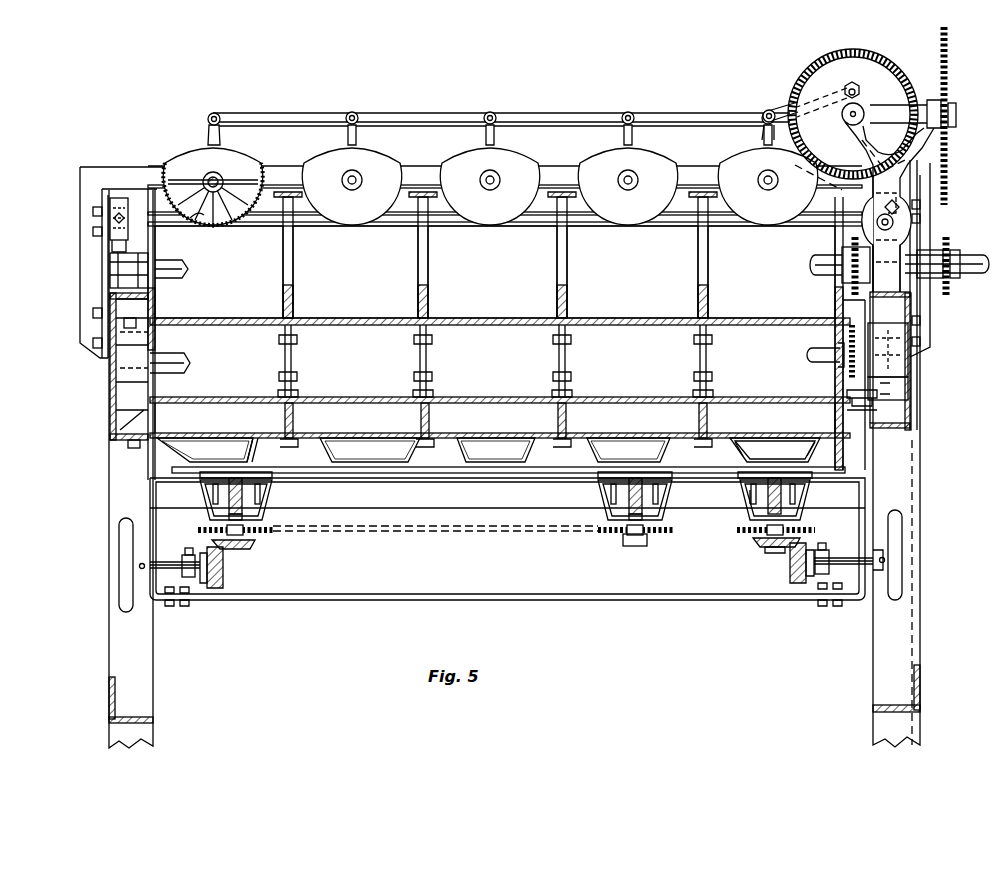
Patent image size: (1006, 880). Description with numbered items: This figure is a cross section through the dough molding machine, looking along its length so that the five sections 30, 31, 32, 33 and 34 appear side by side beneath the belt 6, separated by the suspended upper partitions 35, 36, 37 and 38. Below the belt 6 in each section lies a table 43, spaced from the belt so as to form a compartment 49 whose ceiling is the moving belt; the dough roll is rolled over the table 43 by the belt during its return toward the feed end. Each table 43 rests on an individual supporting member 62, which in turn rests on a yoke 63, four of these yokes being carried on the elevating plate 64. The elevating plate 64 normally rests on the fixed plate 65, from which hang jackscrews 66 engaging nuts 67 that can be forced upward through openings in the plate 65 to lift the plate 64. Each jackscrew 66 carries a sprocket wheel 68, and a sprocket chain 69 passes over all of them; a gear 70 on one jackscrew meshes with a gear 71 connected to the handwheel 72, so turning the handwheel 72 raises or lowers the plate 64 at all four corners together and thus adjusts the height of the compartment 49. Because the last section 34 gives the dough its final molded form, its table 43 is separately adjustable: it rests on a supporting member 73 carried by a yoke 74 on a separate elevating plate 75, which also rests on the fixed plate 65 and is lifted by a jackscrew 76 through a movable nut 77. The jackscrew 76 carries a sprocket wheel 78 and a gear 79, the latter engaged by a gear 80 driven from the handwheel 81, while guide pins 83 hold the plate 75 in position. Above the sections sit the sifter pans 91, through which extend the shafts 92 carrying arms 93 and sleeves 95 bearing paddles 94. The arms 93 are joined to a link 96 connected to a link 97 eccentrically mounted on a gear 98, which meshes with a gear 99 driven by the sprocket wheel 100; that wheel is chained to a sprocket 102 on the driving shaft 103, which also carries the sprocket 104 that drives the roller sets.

The belt 6 is at (246, 317).
The section 30 is at (219, 272).
The section 31 is at (355, 272).
The section 32 is at (492, 272).
The section 33 is at (632, 272).
The section 34 is at (771, 272).
The partition 35 is at (294, 299).
The partition 36 is at (416, 296).
The partition 37 is at (555, 296).
The partition 38 is at (696, 295).
The table 43 is at (200, 438).
The compartment 49 is at (706, 407).
The supporting member 62 is at (208, 446).
The yoke 63 is at (256, 448).
The elevating plate 64 is at (308, 464).
The fixed plate 65 is at (414, 482).
The jackscrew 66 is at (262, 498).
The nut 67 is at (436, 496).
The sprocket wheel 68 is at (270, 533).
The sprocket chain 69 is at (482, 532).
The gear 70 is at (254, 549).
The gear 71 is at (223, 572).
The handwheel 72 is at (131, 603).
The supporting member 73 is at (768, 442).
The yoke 74 is at (733, 458).
The elevating plate 75 is at (807, 460).
The jackscrew 76 is at (796, 498).
The movable nut 77 is at (750, 490).
The sprocket wheel 78 is at (745, 539).
The gear 79 is at (764, 550).
The gear 80 is at (790, 571).
The handwheel 81 is at (905, 528).
The guide pin 83 is at (211, 498).
The sifter pan 91 is at (232, 220).
The shaft 92 is at (206, 176).
The arm 93 is at (208, 134).
The paddle 94 is at (196, 221).
The sleeve 95 is at (223, 178).
The link 96 is at (433, 120).
The link 97 is at (785, 110).
The gear 98 is at (856, 67).
The gear 99 is at (914, 98).
The sprocket wheel 100 is at (947, 78).
The sprocket 102 is at (949, 253).
The driving shaft 103 is at (958, 275).
The sprocket 104 is at (842, 242).